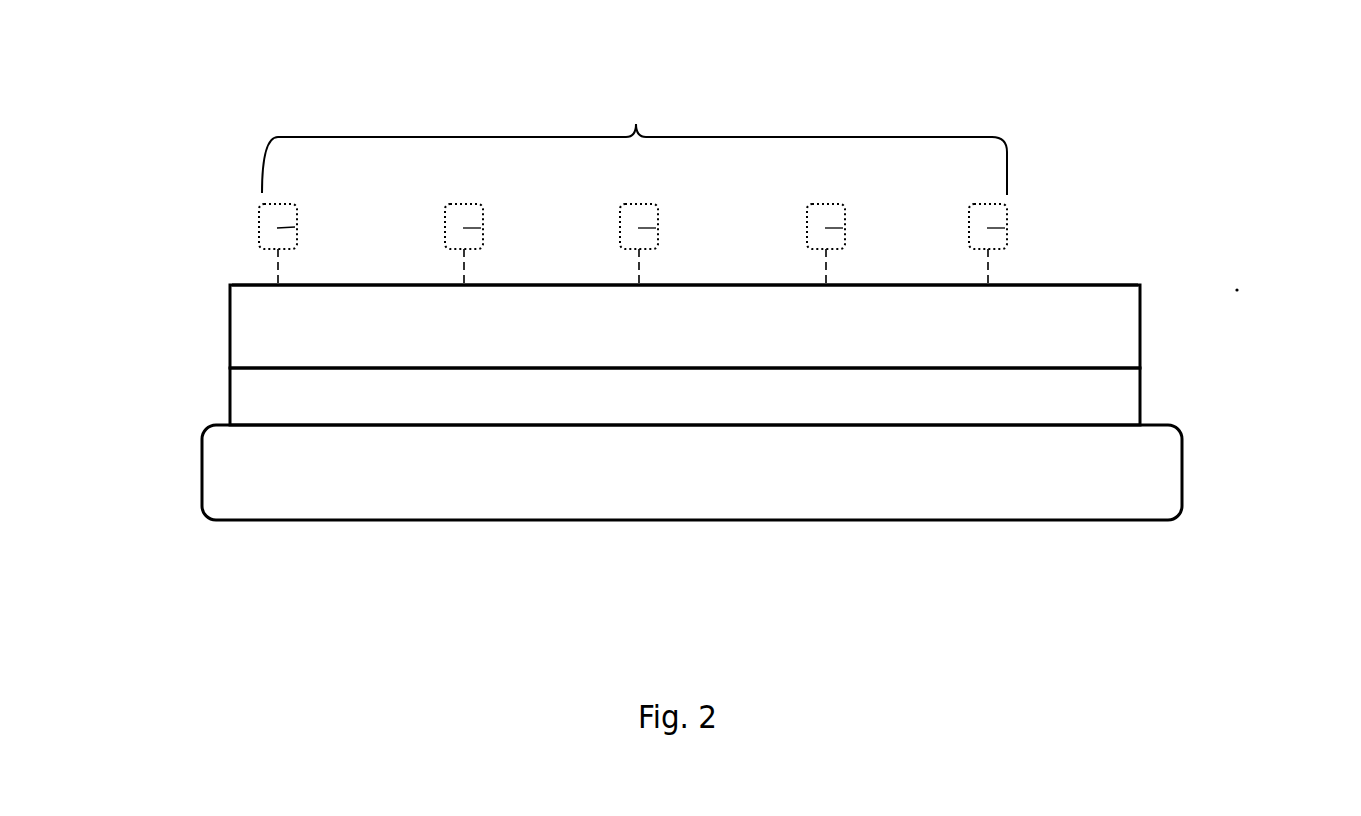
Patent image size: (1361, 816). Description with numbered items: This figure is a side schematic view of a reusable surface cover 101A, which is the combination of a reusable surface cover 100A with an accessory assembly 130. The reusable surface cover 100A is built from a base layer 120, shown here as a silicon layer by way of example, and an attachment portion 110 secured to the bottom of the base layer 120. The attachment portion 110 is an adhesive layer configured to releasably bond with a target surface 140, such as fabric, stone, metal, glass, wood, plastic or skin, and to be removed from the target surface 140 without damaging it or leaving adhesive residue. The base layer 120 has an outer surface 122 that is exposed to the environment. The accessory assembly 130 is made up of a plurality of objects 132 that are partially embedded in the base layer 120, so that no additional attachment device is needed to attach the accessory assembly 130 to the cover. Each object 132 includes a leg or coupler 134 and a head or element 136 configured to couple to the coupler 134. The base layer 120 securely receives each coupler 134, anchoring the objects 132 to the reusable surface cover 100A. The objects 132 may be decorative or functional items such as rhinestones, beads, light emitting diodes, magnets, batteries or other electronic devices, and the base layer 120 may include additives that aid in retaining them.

The reusable surface cover 101A is at (1252, 432).
The reusable surface cover 100A is at (1175, 427).
The attachment portion 110 is at (238, 383).
The base layer 120 is at (228, 330).
The outer surface 122 is at (241, 283).
The accessory assembly 130 is at (636, 124).
The object 132 is at (282, 180).
The coupler 134 is at (282, 270).
The head 136 is at (297, 224).
The target surface 140 is at (200, 473).